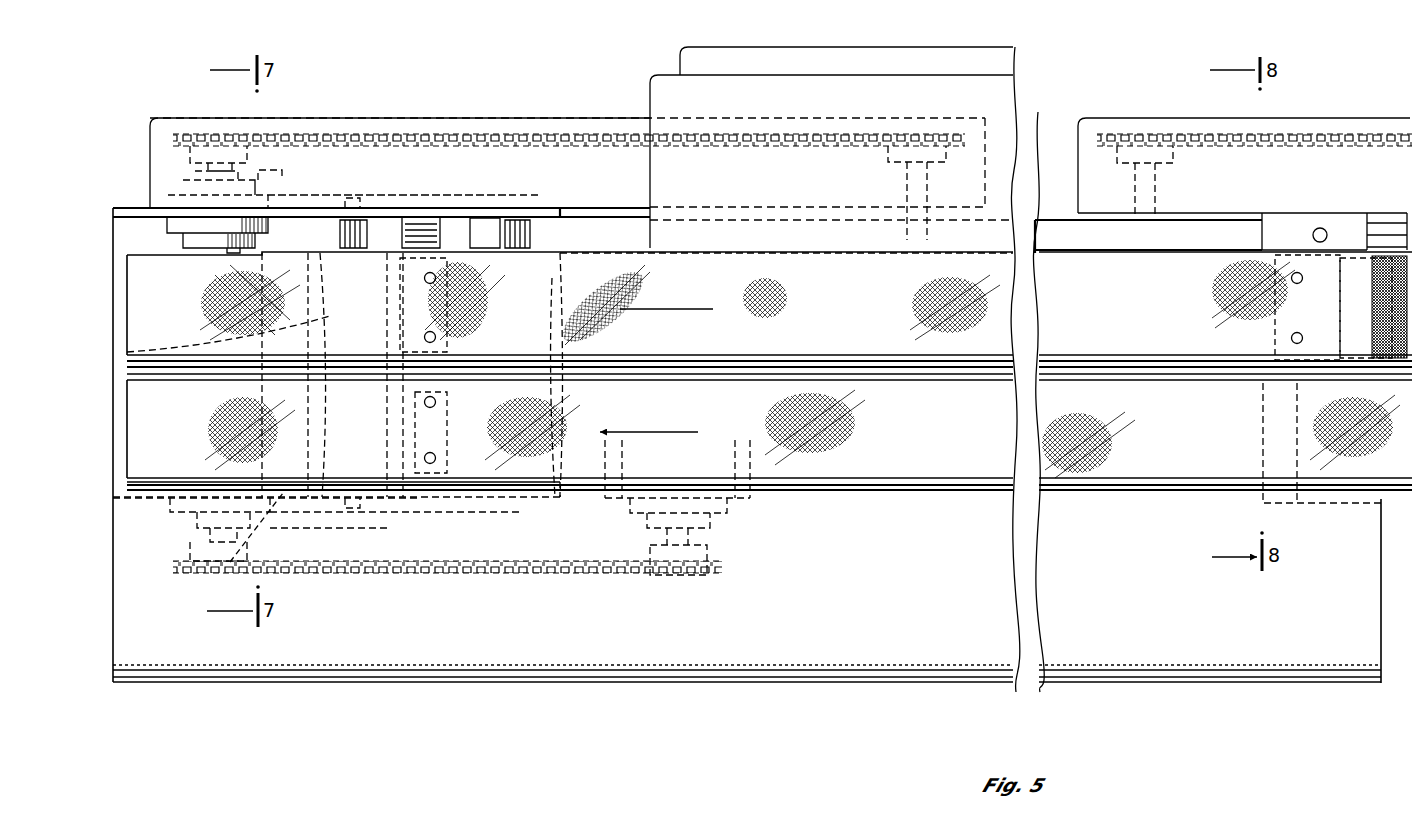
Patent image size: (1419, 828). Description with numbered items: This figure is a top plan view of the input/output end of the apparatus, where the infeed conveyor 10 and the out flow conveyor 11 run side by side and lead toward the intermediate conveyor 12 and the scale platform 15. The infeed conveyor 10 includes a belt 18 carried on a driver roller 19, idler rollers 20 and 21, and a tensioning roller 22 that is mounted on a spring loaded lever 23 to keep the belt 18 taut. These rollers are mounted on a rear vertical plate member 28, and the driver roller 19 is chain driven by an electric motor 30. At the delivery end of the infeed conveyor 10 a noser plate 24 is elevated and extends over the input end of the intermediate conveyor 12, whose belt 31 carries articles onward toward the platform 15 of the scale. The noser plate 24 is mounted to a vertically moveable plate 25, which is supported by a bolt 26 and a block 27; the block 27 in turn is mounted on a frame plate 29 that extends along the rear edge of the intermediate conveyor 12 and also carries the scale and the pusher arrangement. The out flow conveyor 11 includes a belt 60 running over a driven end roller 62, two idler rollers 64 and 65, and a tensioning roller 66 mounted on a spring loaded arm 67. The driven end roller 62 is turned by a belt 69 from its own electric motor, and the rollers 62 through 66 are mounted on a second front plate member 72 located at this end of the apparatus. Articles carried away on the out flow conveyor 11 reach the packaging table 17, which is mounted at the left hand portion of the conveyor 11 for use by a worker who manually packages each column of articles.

The infeed conveyor 10 is at (143, 300).
The out flow conveyor 11 is at (150, 452).
The intermediate conveyor 12 is at (1385, 290).
The platform 15 is at (1403, 352).
The packaging table 17 is at (1048, 659).
The belt 18 is at (724, 267).
The driver roller 19 is at (150, 250).
The idler roller 20 is at (553, 278).
The idler roller 21 is at (127, 352).
The tensioning roller 22 is at (467, 262).
The spring loaded lever 23 is at (395, 210).
The noser plate 24 is at (1388, 260).
The vertically moveable plate 25 is at (1268, 240).
The bolt 26 is at (1318, 228).
The block 27 is at (1273, 228).
The rear vertical plate member 28 is at (137, 208).
The frame plate 29 is at (1273, 213).
The electric motor 30 is at (725, 499).
The belt 31 is at (1400, 347).
The belt 60 is at (900, 452).
The driven end roller 62 is at (160, 482).
The idler roller 64 is at (230, 562).
The idler roller 65 is at (562, 497).
The tensioning roller 66 is at (452, 482).
The spring loaded arm 67 is at (388, 530).
The belt 69 is at (350, 572).
The second front plate member 72 is at (135, 497).